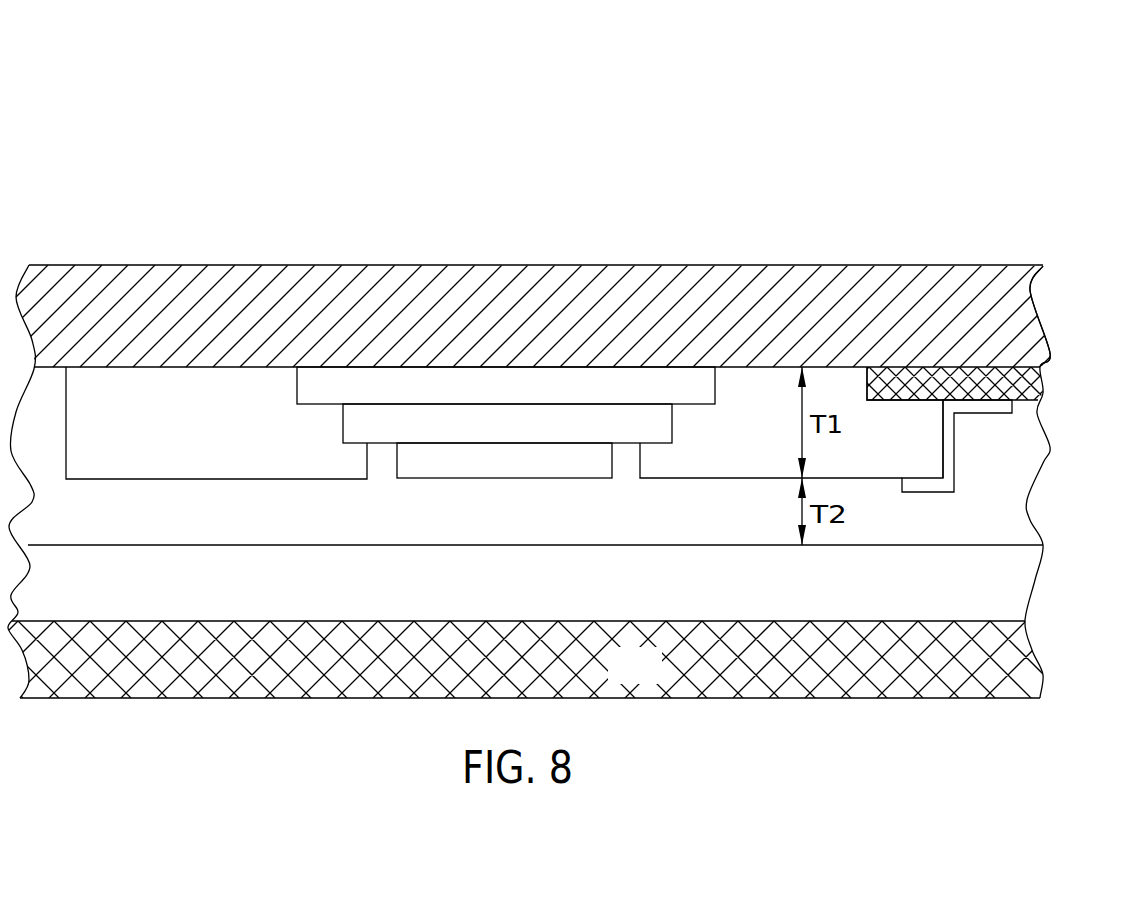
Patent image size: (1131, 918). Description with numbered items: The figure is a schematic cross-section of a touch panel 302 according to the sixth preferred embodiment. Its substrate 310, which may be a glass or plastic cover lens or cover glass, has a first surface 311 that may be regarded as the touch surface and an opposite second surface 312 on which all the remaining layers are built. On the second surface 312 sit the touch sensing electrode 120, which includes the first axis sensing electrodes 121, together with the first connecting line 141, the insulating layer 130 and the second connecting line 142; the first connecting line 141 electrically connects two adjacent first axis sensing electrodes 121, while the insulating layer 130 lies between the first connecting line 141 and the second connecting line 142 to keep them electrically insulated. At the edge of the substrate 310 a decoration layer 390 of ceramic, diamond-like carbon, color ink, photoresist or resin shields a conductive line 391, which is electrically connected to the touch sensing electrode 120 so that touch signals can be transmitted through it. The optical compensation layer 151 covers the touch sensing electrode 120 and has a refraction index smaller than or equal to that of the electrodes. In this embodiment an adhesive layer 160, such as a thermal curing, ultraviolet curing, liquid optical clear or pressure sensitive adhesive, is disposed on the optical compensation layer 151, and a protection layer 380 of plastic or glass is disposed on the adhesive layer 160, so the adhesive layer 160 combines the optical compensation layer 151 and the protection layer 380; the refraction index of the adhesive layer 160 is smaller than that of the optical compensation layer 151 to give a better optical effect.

The touch panel 302 is at (933, 172).
The substrate 310 is at (398, 290).
The first surface 311 is at (1005, 265).
The second surface 312 is at (1037, 395).
The decoration layer 390 is at (1030, 380).
The conductive line 391 is at (950, 477).
The first connecting line 141 is at (523, 385).
The insulating layer 130 is at (520, 430).
The second connecting line 142 is at (441, 460).
The first axis sensing electrode 121 is at (192, 440).
The touch sensing electrode 120 is at (504, 486).
The optical compensation layer 151 is at (965, 520).
The adhesive layer 160 is at (657, 600).
The protection layer 380 is at (657, 677).